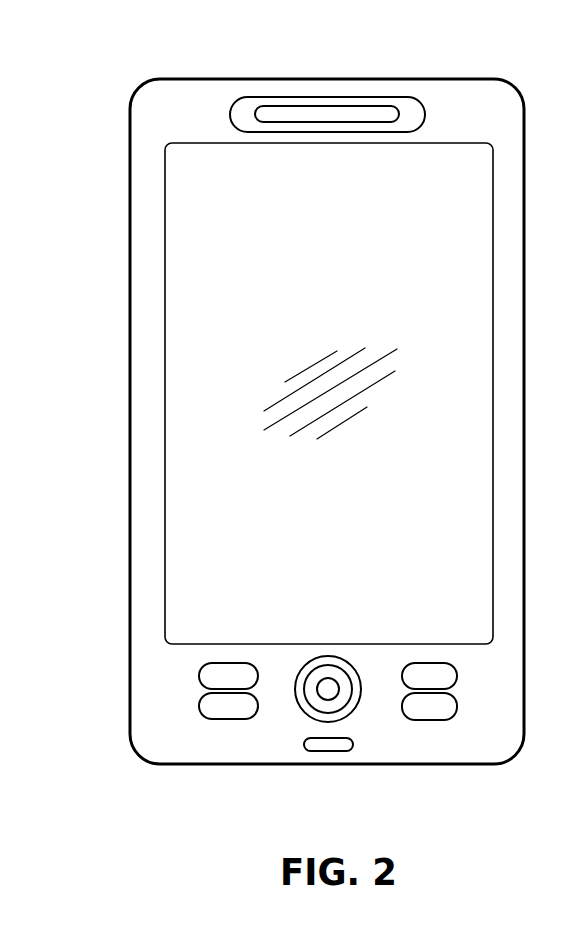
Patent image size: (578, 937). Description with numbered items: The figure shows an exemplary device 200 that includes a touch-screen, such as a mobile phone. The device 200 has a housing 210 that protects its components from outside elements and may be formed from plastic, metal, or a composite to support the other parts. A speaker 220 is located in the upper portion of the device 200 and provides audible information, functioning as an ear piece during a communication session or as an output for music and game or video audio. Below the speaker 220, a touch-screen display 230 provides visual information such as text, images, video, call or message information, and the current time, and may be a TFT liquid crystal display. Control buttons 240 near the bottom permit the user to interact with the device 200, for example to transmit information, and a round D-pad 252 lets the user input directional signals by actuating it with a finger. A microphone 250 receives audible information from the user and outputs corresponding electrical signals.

The device 200 is at (145, 48).
The housing 210 is at (130, 213).
The speaker 220 is at (230, 113).
The touch-screen display 230 is at (185, 265).
The control buttons 240 is at (173, 707).
The microphone 250 is at (333, 752).
The D-pad 252 is at (359, 703).